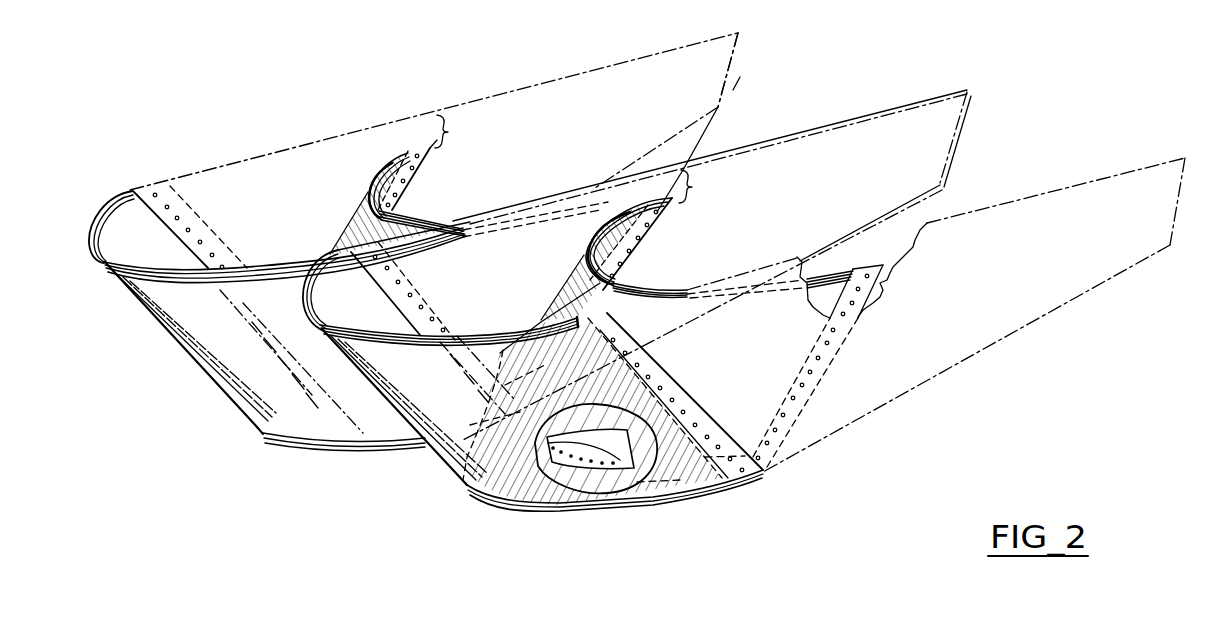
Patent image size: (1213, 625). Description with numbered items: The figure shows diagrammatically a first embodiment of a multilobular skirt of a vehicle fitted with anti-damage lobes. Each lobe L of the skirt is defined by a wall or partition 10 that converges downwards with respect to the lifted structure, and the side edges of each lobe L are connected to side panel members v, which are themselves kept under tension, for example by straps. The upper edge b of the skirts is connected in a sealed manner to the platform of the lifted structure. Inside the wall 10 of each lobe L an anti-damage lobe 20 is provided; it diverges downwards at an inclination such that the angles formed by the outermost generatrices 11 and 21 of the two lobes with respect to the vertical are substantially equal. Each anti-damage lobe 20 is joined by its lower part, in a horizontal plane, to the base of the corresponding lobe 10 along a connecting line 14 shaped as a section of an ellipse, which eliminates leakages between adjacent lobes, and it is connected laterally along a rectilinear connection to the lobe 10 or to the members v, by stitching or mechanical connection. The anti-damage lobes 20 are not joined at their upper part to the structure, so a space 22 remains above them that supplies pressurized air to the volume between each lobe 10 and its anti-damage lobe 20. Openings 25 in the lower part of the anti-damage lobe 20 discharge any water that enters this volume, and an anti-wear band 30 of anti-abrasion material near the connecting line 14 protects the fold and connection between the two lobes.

The wall 10 is at (312, 424).
The outermost generatrix 11 is at (183, 348).
The connecting line 14 is at (363, 443).
The anti-damage lobe 20 is at (430, 209).
The outermost generatrix 21 is at (705, 128).
The space 22 is at (575, 159).
The openings 25 is at (503, 491).
The anti-wear band 30 is at (333, 446).
The upper edge b is at (265, 268).
The side panel members v is at (788, 145).
The lobe L is at (296, 418).